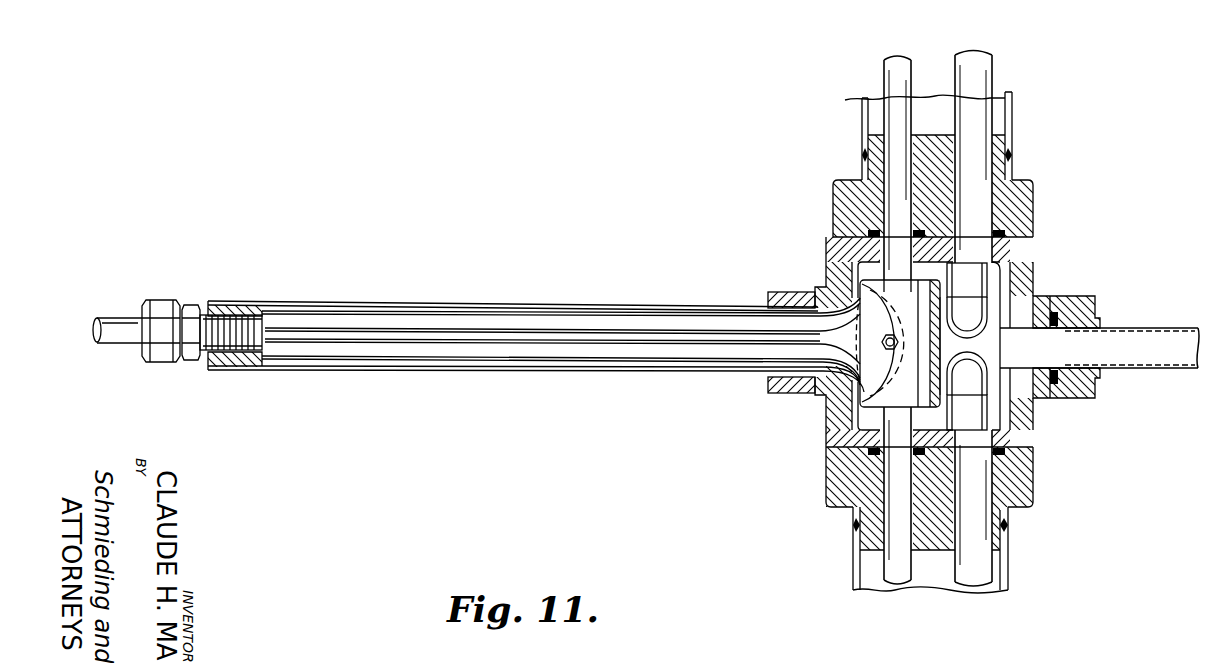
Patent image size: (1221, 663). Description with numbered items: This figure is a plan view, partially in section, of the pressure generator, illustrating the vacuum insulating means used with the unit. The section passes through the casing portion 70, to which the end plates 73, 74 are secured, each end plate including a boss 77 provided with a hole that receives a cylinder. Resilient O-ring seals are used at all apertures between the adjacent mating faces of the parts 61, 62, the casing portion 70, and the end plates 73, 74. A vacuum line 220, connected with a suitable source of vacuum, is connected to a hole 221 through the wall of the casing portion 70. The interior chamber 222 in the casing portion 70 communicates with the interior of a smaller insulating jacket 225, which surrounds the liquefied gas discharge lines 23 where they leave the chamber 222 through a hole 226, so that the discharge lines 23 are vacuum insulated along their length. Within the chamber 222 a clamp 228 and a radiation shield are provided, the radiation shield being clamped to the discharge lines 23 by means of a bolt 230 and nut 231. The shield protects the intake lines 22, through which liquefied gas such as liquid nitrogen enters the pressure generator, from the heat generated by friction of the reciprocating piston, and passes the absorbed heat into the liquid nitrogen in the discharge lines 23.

The intake lines 22 is at (978, 77).
The discharge lines 23 is at (113, 318).
The part 61 is at (858, 580).
The part 62 is at (862, 105).
The casing portion 70 is at (1015, 412).
The end plate 73 is at (1030, 470).
The end plate 74 is at (1033, 190).
The boss 77 is at (1010, 510).
The vacuum line 220 is at (1165, 335).
The hole 221 is at (1022, 300).
The interior chamber 222 is at (1035, 245).
The insulating jacket 225 is at (496, 305).
The hole 226 is at (830, 388).
The clamp 228 is at (878, 283).
The bolt 230 is at (840, 396).
The nut 231 is at (860, 300).